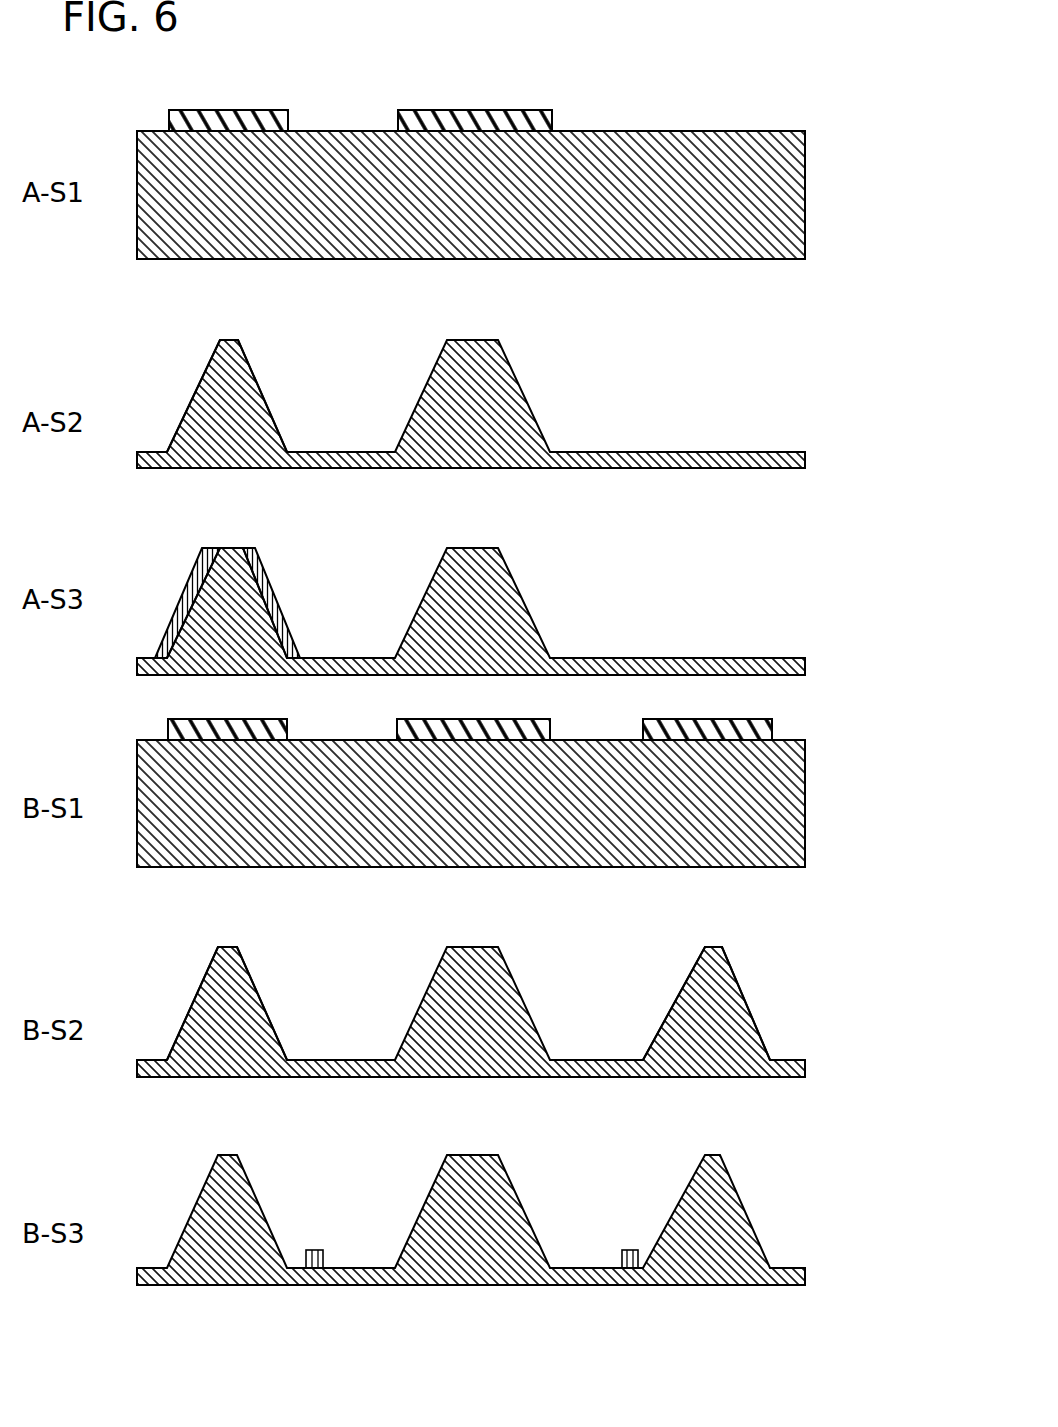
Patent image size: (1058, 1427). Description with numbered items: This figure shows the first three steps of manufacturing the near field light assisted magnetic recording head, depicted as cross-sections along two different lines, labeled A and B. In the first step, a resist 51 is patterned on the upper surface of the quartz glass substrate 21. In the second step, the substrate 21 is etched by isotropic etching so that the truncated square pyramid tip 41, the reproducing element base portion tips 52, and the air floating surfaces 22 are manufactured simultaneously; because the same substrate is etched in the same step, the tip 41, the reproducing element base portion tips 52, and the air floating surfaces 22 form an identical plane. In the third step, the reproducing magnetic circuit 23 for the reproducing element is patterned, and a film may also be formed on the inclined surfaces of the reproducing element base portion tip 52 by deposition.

The quartz glass substrate 21 is at (650, 242).
The resist 51 is at (443, 117).
The truncated square pyramid tip 41 is at (458, 423).
The reproducing element base portion tip 52 is at (235, 412).
The air floating surface 22 is at (234, 1017).
The reproducing magnetic circuit 23 is at (192, 590).